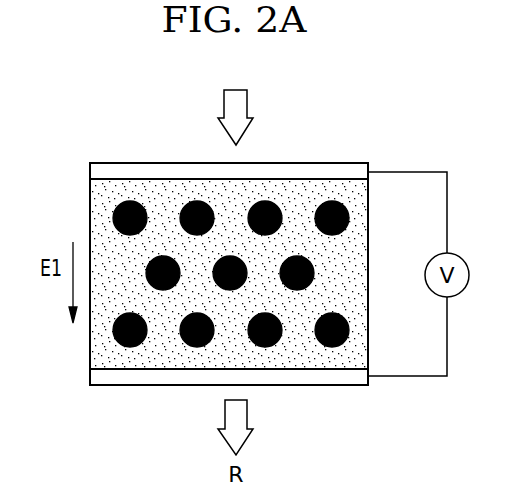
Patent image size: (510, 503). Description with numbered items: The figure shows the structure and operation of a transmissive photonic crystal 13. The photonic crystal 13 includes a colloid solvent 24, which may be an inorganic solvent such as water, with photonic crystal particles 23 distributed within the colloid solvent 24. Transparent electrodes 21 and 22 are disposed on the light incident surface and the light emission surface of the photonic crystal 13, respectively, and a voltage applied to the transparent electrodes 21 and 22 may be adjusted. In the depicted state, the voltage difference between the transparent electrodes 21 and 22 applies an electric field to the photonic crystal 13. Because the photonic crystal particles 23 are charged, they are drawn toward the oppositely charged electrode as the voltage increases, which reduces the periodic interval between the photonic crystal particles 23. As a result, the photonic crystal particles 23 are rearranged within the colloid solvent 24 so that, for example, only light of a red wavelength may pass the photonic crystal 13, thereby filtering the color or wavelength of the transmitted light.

The transmissive photonic crystal 13 is at (382, 320).
The transparent electrode 21 is at (102, 377).
The transparent electrode 22 is at (100, 170).
The photonic crystal particles 23 is at (349, 218).
The colloid solvent 24 is at (358, 252).